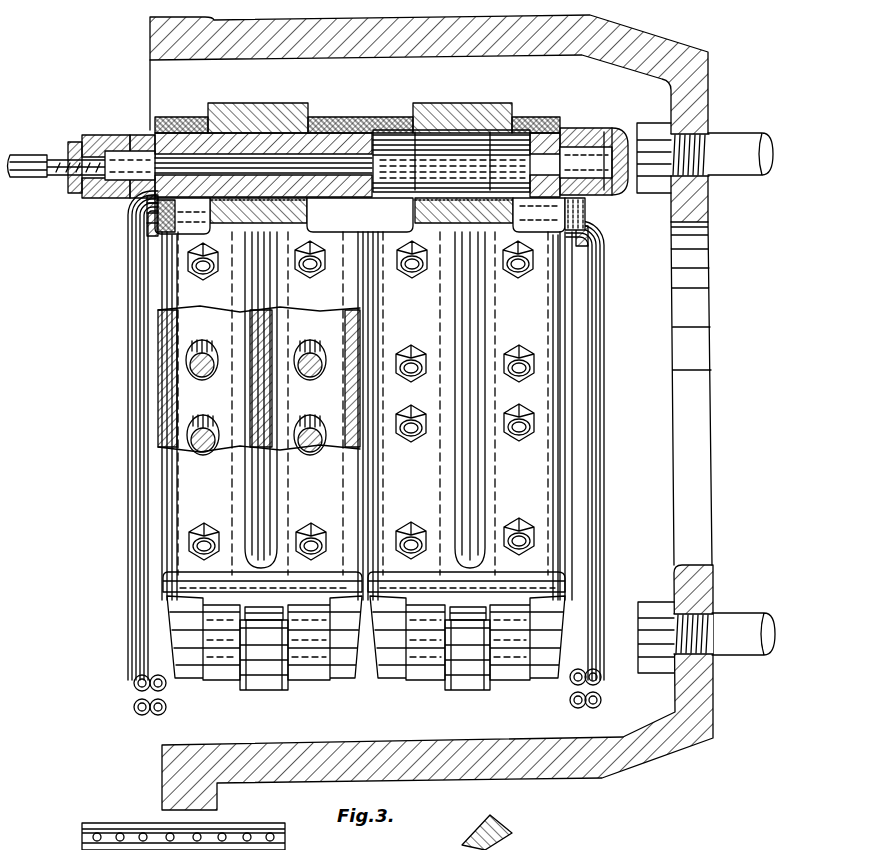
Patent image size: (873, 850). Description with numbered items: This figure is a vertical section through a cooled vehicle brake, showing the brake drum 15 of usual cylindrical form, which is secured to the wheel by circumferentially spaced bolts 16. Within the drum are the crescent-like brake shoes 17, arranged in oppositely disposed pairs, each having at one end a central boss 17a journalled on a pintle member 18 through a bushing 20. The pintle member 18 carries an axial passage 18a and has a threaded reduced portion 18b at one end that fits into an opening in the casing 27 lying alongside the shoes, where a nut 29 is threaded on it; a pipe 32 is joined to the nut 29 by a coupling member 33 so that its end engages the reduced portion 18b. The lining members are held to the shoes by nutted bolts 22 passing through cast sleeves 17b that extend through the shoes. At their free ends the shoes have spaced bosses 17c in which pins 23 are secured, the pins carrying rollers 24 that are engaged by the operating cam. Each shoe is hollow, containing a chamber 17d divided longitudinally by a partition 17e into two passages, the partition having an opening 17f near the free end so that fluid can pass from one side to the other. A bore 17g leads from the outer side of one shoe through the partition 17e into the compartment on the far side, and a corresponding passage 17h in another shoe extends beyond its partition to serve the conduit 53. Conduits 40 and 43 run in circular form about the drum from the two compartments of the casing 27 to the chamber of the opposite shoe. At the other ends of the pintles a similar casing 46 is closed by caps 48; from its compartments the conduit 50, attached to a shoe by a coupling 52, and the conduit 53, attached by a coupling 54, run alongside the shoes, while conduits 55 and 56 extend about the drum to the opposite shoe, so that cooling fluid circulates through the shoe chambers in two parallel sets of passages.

The brake drum 15 is at (240, 30).
The bolts 16 is at (724, 140).
The brake shoes 17 is at (165, 318).
The bosses or hubs 17a is at (255, 108).
The cast hubs or sleeves 17b is at (328, 378).
The spaced bosses 17c is at (222, 688).
The chamber 17d is at (180, 383).
The partition 17e is at (255, 343).
The opening 17f is at (240, 596).
The passage or bore 17g is at (205, 225).
The bore or passage 17h is at (476, 188).
The pintle member 18 is at (390, 200).
The bore or passage 18a is at (322, 200).
The reduced portion 18b is at (605, 135).
The bushing 20 is at (290, 117).
The nutted bolts 22 is at (313, 275).
The pins 23 is at (238, 676).
The rollers 24 is at (268, 690).
The casing 27 is at (138, 135).
The nuts 29 is at (95, 135).
The pipe or conduit 32 is at (22, 155).
The coupling members 33 is at (72, 142).
The conduit 40 is at (128, 262).
The conduit 43 is at (134, 213).
The casing 46 is at (588, 128).
The closing caps 48 is at (612, 135).
The conduit 50 is at (604, 255).
The coupling 52 is at (588, 238).
The conduit 53 is at (592, 205).
The coupling 54 is at (552, 226).
The conduit 55 is at (573, 703).
The conduit 56 is at (600, 703).